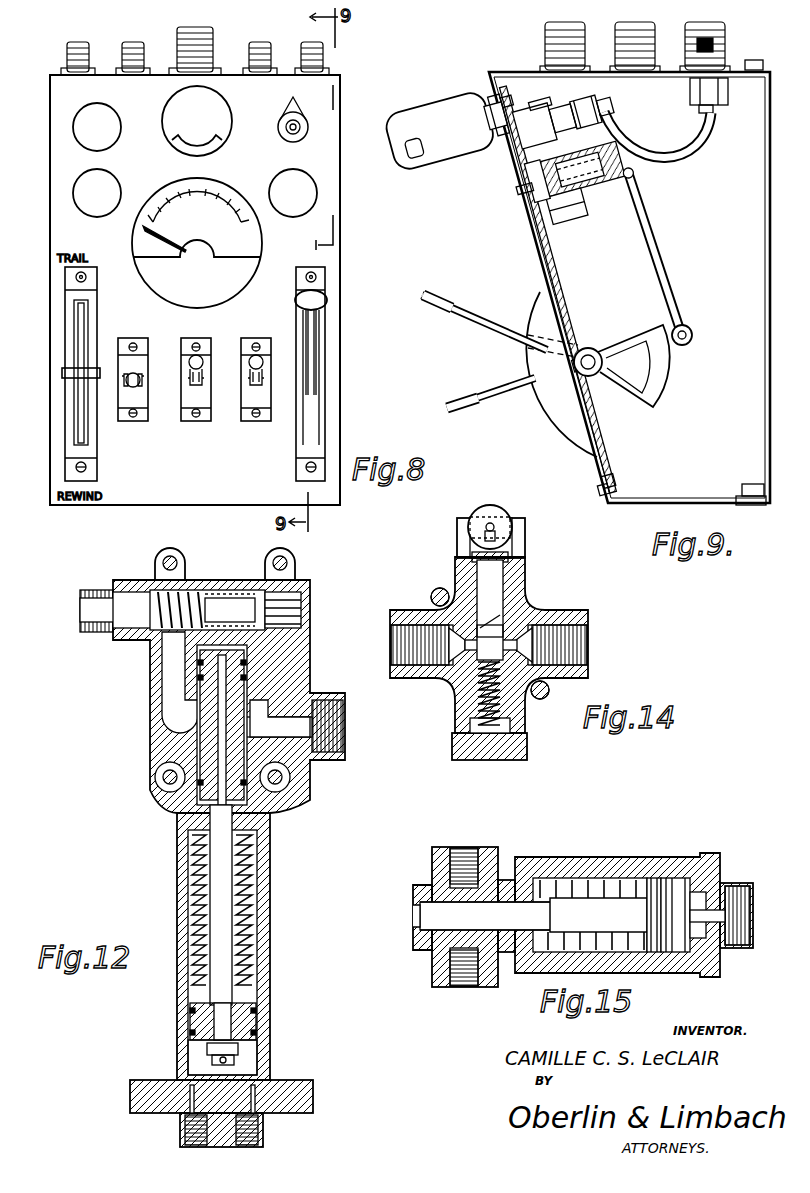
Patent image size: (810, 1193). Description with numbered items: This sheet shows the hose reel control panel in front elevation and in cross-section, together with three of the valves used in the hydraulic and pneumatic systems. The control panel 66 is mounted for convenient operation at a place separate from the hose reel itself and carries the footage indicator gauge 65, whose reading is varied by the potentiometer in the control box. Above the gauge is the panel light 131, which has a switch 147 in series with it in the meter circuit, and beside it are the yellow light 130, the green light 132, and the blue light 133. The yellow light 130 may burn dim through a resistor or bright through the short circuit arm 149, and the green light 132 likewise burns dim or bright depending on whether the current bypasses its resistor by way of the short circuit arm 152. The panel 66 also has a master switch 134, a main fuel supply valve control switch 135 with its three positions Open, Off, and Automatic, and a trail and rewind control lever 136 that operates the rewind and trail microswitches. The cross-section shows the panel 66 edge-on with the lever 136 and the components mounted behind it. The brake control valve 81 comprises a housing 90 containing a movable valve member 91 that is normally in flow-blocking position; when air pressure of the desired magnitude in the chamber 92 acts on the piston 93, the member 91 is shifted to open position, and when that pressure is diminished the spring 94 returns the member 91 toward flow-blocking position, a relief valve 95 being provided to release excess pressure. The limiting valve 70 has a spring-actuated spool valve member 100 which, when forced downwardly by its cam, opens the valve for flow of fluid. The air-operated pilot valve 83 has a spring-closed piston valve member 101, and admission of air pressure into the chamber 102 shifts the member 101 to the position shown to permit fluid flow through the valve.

In FIG. 8, the footage indicator gauge 65 is at (214, 196).
In FIG. 8, the control panel 66 is at (326, 168).
In FIG. 9, the control panel 66 is at (501, 304).
In FIG. 14, the limiting valve 70 is at (527, 590).
In FIG. 12, the brake control valve 81 is at (170, 860).
In FIG. 15, the air-operated pilot valve 83 is at (608, 857).
In FIG. 12, the housing 90 is at (212, 680).
In FIG. 12, the movable valve member 91 is at (198, 700).
In FIG. 12, the chamber 92 is at (250, 1063).
In FIG. 12, the piston 93 is at (253, 1015).
In FIG. 12, the spring 94 is at (245, 925).
In FIG. 12, the relief valve 95 is at (232, 608).
In FIG. 14, the spring-actuated spool valve member 100 is at (527, 606).
In FIG. 15, the spring-closed piston valve member 101 is at (515, 912).
In FIG. 15, the chamber 102 is at (684, 892).
In FIG. 8, the yellow light 130 is at (97, 127).
In FIG. 8, the panel light 131 is at (212, 115).
In FIG. 9, the panel light 131 is at (430, 95).
In FIG. 8, the green light 132 is at (97, 193).
In FIG. 8, the blue light 133 is at (293, 193).
In FIG. 8, the master switch 134 is at (242, 415).
In FIG. 8, the main fuel supply valve control switch 135 is at (122, 415).
In FIG. 8, the trail and rewind control lever 136 is at (70, 373).
In FIG. 9, the trail and rewind control lever 136 is at (462, 398).
In FIG. 8, the switch 147 is at (182, 415).
In FIG. 8, the short circuit arm 149 is at (301, 124).
In FIG. 9, the short circuit arm 149 is at (457, 104).
In FIG. 8, the short circuit arm 152 is at (336, 114).
In FIG. 9, the short circuit arm 152 is at (456, 117).